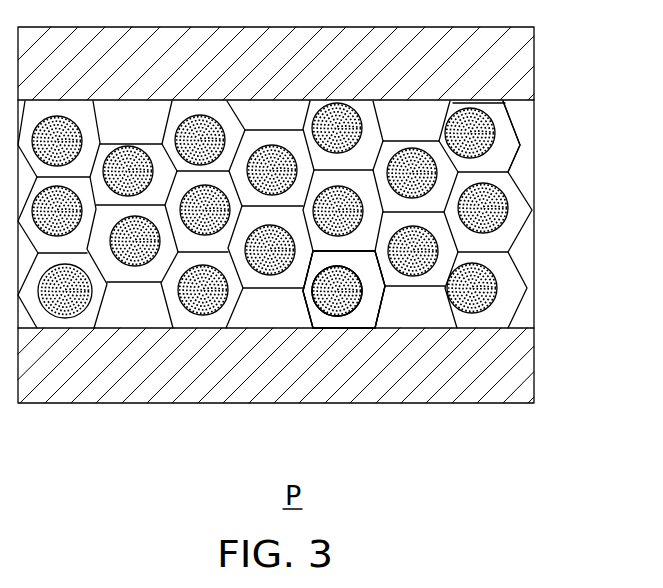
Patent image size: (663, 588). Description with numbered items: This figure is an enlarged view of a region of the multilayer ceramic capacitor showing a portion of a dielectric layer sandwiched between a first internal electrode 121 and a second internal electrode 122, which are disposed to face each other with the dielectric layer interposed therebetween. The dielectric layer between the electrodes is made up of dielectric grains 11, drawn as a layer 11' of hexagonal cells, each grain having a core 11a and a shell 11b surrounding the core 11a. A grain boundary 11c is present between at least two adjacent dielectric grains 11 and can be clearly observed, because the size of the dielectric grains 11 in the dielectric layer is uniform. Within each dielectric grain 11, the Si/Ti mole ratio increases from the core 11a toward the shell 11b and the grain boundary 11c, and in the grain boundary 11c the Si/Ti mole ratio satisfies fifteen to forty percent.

The first internal electrode 121 is at (524, 62).
The second internal electrode 122 is at (526, 363).
The honeycomb core layer 11' is at (337, 215).
The dielectric grain 11 is at (371, 378).
The core 11a is at (352, 309).
The shell 11b is at (372, 296).
The grain boundary 11c is at (503, 168).